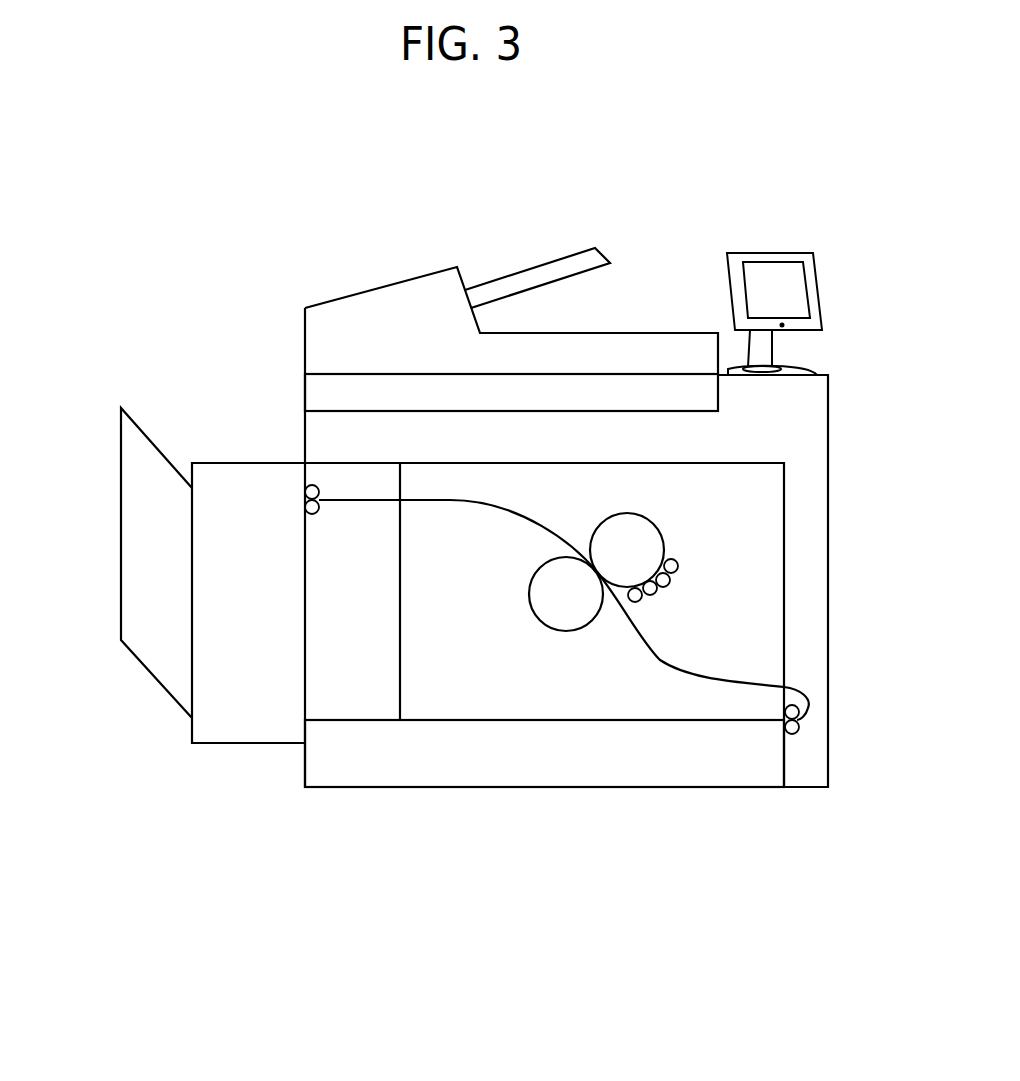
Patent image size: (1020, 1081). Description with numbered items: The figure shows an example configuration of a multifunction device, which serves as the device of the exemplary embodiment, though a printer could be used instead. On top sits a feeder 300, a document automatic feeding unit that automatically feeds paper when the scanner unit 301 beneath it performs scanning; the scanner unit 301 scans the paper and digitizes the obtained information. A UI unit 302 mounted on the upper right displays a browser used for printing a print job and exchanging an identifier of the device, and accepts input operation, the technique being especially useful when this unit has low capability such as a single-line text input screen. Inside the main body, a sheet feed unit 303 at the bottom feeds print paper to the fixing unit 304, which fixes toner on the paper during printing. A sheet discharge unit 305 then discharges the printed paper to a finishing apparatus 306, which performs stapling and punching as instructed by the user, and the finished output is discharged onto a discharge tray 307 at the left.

The feeder 300 is at (440, 272).
The scanner unit 301 is at (304, 398).
The UI unit 302 is at (775, 272).
The sheet feed unit 303 is at (568, 788).
The fixing unit 304 is at (784, 542).
The sheet discharge unit 305 is at (365, 721).
The finishing apparatus 306 is at (218, 745).
The discharge tray 307 is at (146, 668).